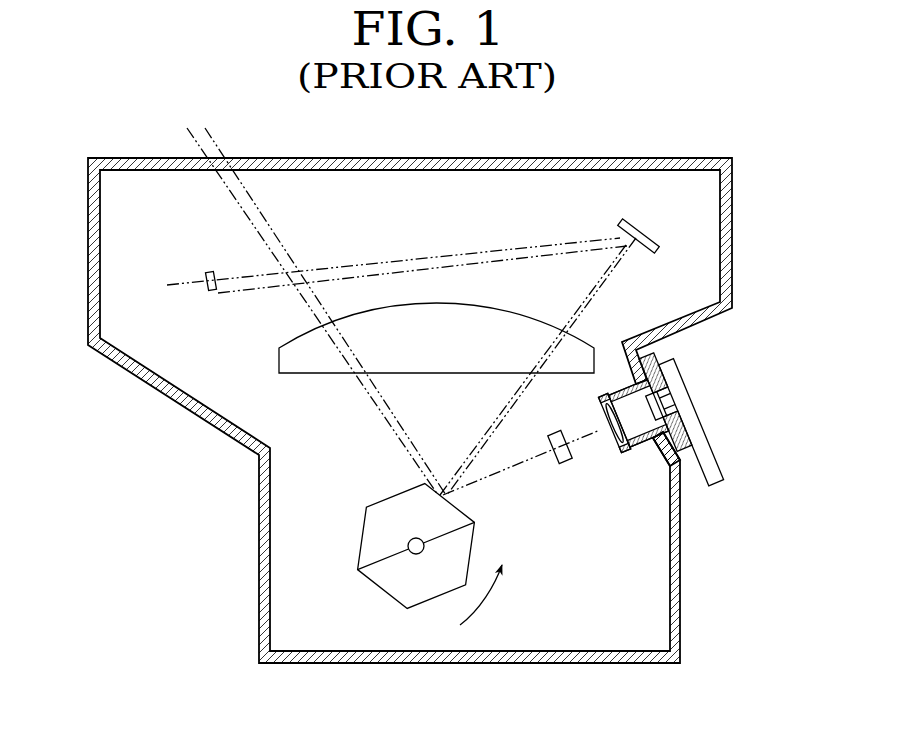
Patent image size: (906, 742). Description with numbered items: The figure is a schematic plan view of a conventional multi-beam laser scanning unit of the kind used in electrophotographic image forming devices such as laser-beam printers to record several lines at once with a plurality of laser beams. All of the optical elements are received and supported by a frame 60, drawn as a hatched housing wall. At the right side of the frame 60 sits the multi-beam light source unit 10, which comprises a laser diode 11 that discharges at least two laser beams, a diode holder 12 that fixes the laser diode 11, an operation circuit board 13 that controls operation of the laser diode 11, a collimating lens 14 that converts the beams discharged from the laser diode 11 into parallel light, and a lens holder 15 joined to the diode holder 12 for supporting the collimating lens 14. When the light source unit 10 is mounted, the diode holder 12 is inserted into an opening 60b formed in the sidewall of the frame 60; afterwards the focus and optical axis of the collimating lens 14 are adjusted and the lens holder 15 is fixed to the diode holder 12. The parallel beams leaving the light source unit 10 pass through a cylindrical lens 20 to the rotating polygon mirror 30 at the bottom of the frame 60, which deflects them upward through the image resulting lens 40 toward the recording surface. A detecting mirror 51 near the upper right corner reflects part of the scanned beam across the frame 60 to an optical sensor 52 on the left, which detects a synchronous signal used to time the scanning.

The multi-beam light source unit 10 is at (700, 417).
The laser diode 11 is at (656, 406).
The diode holder 12 is at (665, 402).
The operation circuit board 13 is at (667, 401).
The collimating lens 14 is at (691, 422).
The lens holder 15 is at (634, 414).
The cylindrical lens 20 is at (563, 463).
The polygon mirror 30 is at (417, 610).
The image resulting lens 40 is at (279, 360).
The detecting mirror 51 is at (641, 228).
The optical sensor 52 is at (207, 277).
The frame 60 is at (218, 491).
The opening 60b is at (658, 440).